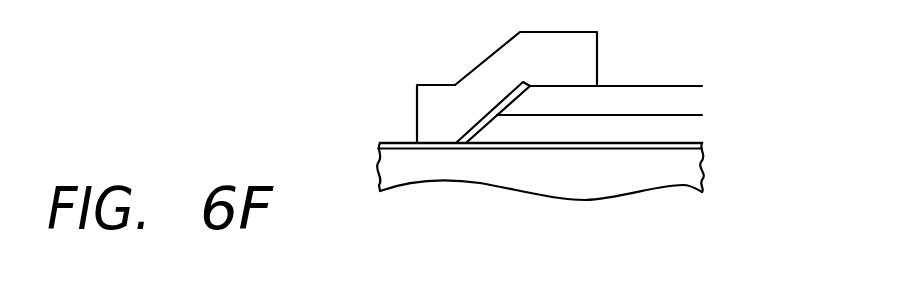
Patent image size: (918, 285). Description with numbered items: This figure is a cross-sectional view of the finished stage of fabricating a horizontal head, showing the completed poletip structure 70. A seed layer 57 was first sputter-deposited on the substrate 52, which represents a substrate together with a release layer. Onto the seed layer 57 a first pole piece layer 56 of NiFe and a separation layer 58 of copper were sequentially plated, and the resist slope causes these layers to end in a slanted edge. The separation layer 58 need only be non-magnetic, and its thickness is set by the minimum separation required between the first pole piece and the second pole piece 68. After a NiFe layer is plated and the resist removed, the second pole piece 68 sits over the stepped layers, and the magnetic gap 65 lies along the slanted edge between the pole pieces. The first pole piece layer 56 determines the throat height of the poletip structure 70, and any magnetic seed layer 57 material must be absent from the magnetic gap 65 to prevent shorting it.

The substrate 52 is at (388, 173).
The first pole piece layer 56 is at (697, 131).
The seed layer 57 is at (702, 145).
The separation layer 58 is at (703, 100).
The magnetic gap 65 is at (455, 143).
The second pole piece 68 is at (577, 32).
The poletip structure 70 is at (406, 46).